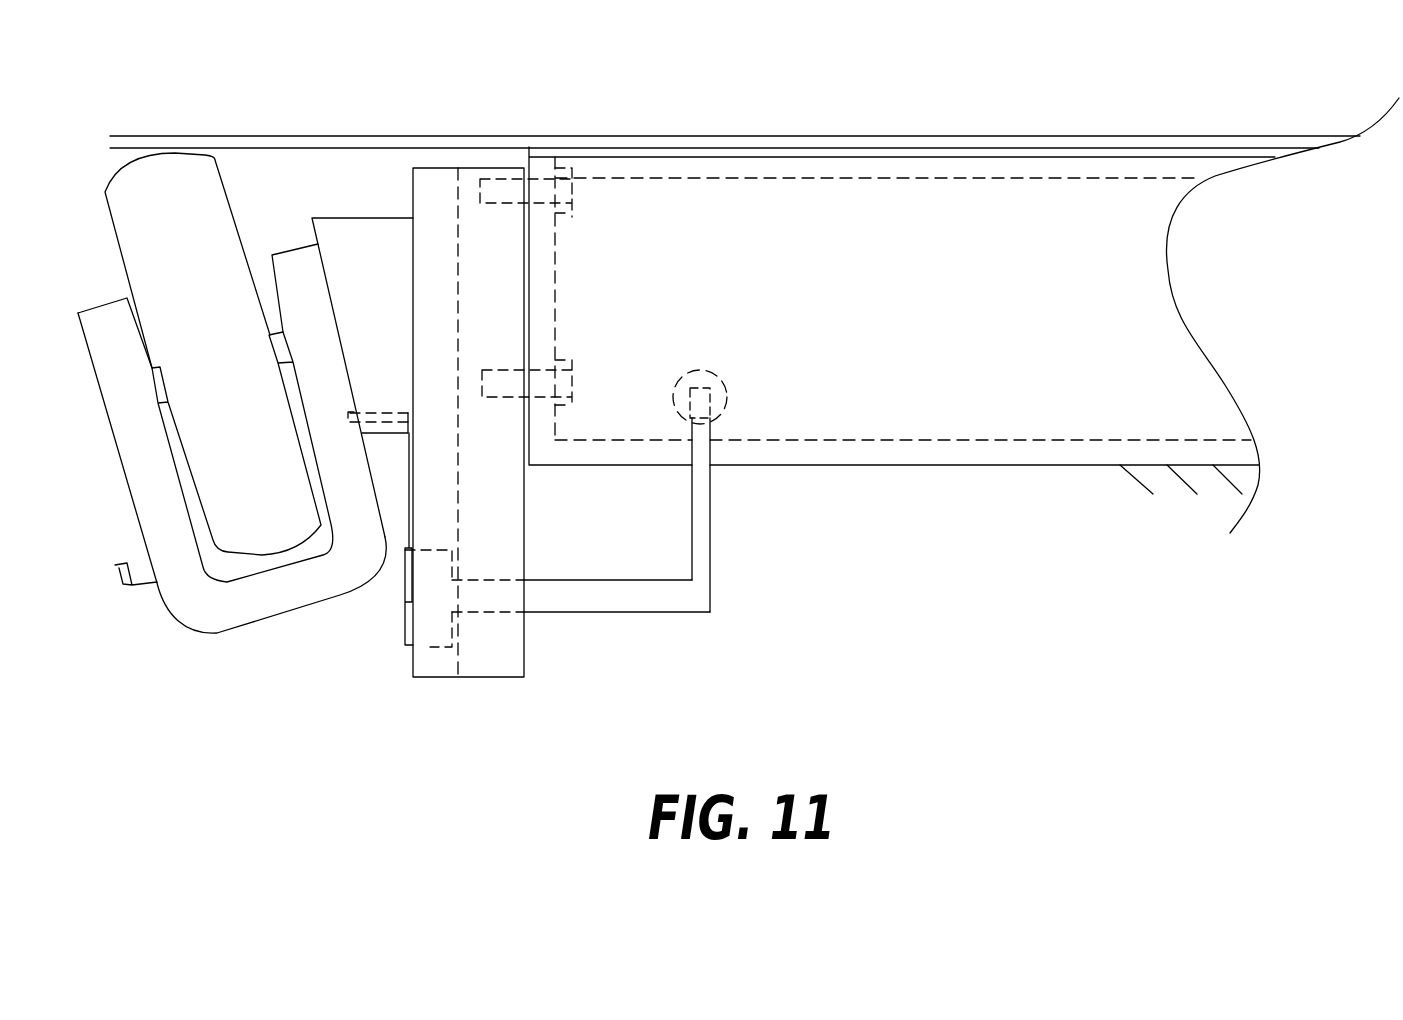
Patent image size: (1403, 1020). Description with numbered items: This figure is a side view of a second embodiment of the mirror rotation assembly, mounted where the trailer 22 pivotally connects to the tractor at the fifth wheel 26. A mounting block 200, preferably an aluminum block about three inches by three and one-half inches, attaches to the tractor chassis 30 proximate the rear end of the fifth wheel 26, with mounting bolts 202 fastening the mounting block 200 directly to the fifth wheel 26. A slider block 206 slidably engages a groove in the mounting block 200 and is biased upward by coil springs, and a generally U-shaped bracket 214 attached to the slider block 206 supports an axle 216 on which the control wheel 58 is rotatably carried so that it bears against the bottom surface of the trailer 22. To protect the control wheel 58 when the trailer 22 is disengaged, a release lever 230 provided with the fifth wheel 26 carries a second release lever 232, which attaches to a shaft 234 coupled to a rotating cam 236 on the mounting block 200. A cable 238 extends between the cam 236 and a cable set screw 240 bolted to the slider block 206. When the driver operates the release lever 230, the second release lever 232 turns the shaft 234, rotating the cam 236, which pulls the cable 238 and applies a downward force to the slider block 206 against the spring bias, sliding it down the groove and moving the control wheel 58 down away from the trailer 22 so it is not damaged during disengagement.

The trailer 22 is at (290, 138).
The fifth wheel 26 is at (1022, 177).
The tractor chassis 30 is at (1133, 472).
The control wheel 58 is at (223, 214).
The mounting block 200 is at (495, 650).
The mounting bolts 202 is at (563, 193).
The slider block 206 is at (382, 235).
The U-shaped bracket 214 is at (197, 607).
The axle 216 is at (272, 295).
The release lever 230 is at (693, 368).
The second release lever 232 is at (693, 560).
The shaft 234 is at (568, 593).
The rotating cam 236 is at (428, 647).
The cable 238 is at (409, 483).
The cable set screw 240 is at (390, 412).